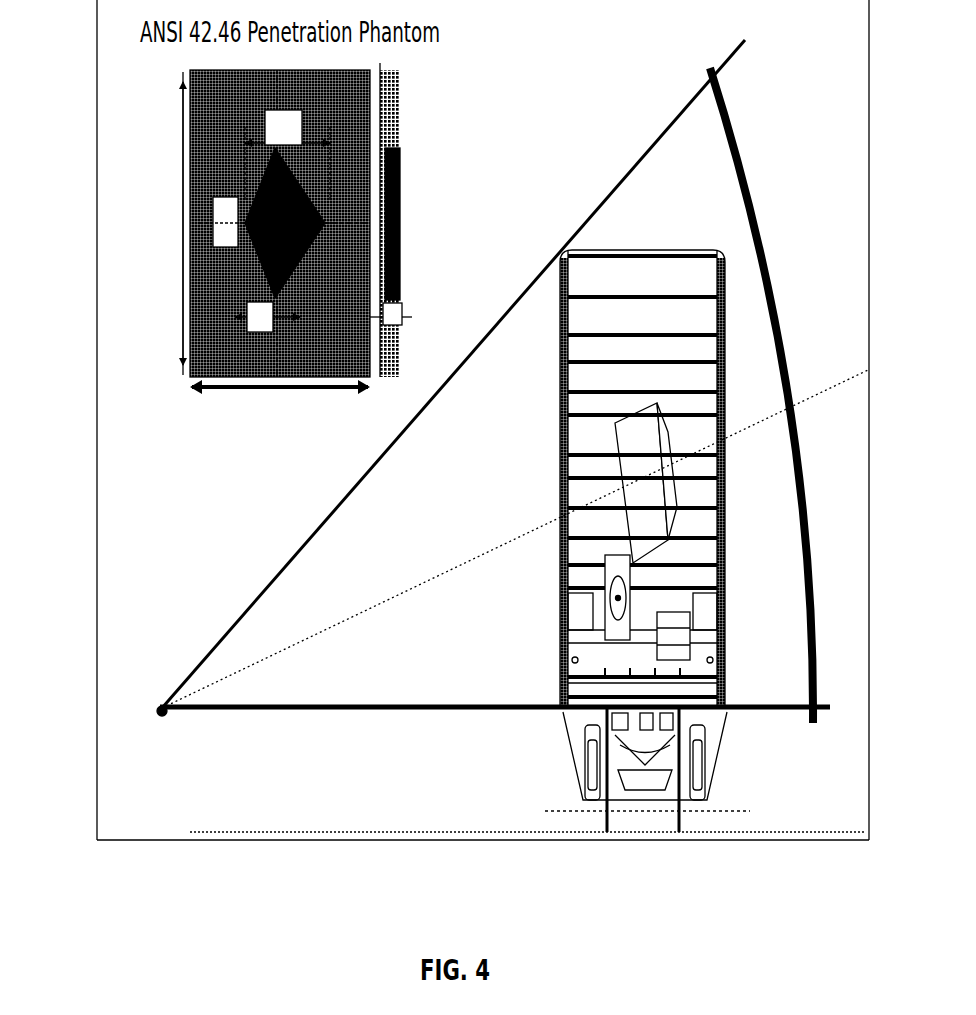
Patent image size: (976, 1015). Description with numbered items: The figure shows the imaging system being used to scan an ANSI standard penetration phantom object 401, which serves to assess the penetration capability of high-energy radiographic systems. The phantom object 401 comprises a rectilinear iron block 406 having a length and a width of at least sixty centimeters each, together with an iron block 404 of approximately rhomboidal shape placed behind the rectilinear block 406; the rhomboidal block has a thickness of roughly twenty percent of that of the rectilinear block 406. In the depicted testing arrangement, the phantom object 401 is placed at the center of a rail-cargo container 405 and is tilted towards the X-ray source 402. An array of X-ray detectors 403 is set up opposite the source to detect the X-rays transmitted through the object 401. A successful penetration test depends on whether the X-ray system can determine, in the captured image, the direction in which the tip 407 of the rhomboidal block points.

The ANSI 42.46 penetration phantom object 401 is at (405, 106).
The X-ray source 402 is at (165, 706).
The array of X-ray detectors 403 is at (752, 183).
The rhomboidal iron block 404 is at (263, 257).
The rail-cargo container 405 is at (717, 337).
The rectilinear iron block 406 is at (200, 138).
The tip of the rhomboidal object 407 is at (320, 223).